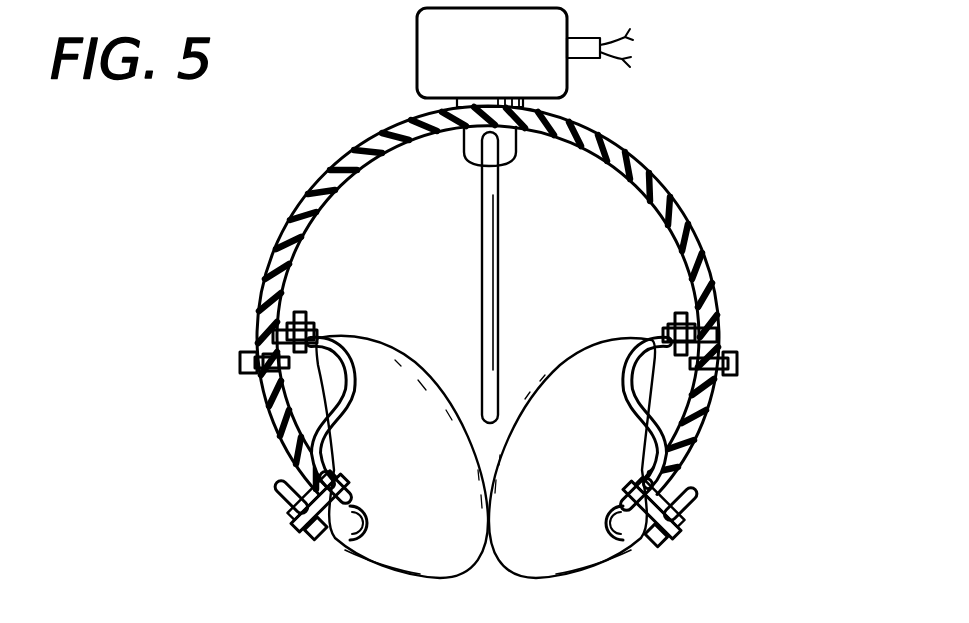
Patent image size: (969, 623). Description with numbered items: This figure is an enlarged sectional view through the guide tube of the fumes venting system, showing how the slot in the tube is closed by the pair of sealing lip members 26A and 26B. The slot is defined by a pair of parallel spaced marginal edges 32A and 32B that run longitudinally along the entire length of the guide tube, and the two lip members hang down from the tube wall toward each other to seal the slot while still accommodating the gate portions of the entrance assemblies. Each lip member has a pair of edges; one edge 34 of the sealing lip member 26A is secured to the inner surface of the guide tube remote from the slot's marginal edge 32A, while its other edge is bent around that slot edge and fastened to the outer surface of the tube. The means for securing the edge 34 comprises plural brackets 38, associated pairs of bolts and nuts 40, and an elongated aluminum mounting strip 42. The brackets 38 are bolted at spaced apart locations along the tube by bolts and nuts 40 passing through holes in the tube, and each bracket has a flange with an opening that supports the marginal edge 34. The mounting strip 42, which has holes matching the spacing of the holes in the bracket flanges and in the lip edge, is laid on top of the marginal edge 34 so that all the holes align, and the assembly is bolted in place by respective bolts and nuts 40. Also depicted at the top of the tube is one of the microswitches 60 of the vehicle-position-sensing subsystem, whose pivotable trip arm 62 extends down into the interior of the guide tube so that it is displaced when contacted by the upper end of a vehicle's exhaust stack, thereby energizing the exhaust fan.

The sealing lip member 26A is at (630, 355).
The sealing lip member 26B is at (340, 416).
The marginal edge of slot 32A is at (637, 540).
The marginal edge of slot 32B is at (353, 540).
The edge of sealing lip member 34 is at (277, 343).
The bracket 38 is at (260, 340).
The bolts and nuts 40 is at (301, 320).
The mounting strip 42 is at (306, 338).
The microswitch 60 is at (417, 58).
The trip arm 62 is at (498, 290).